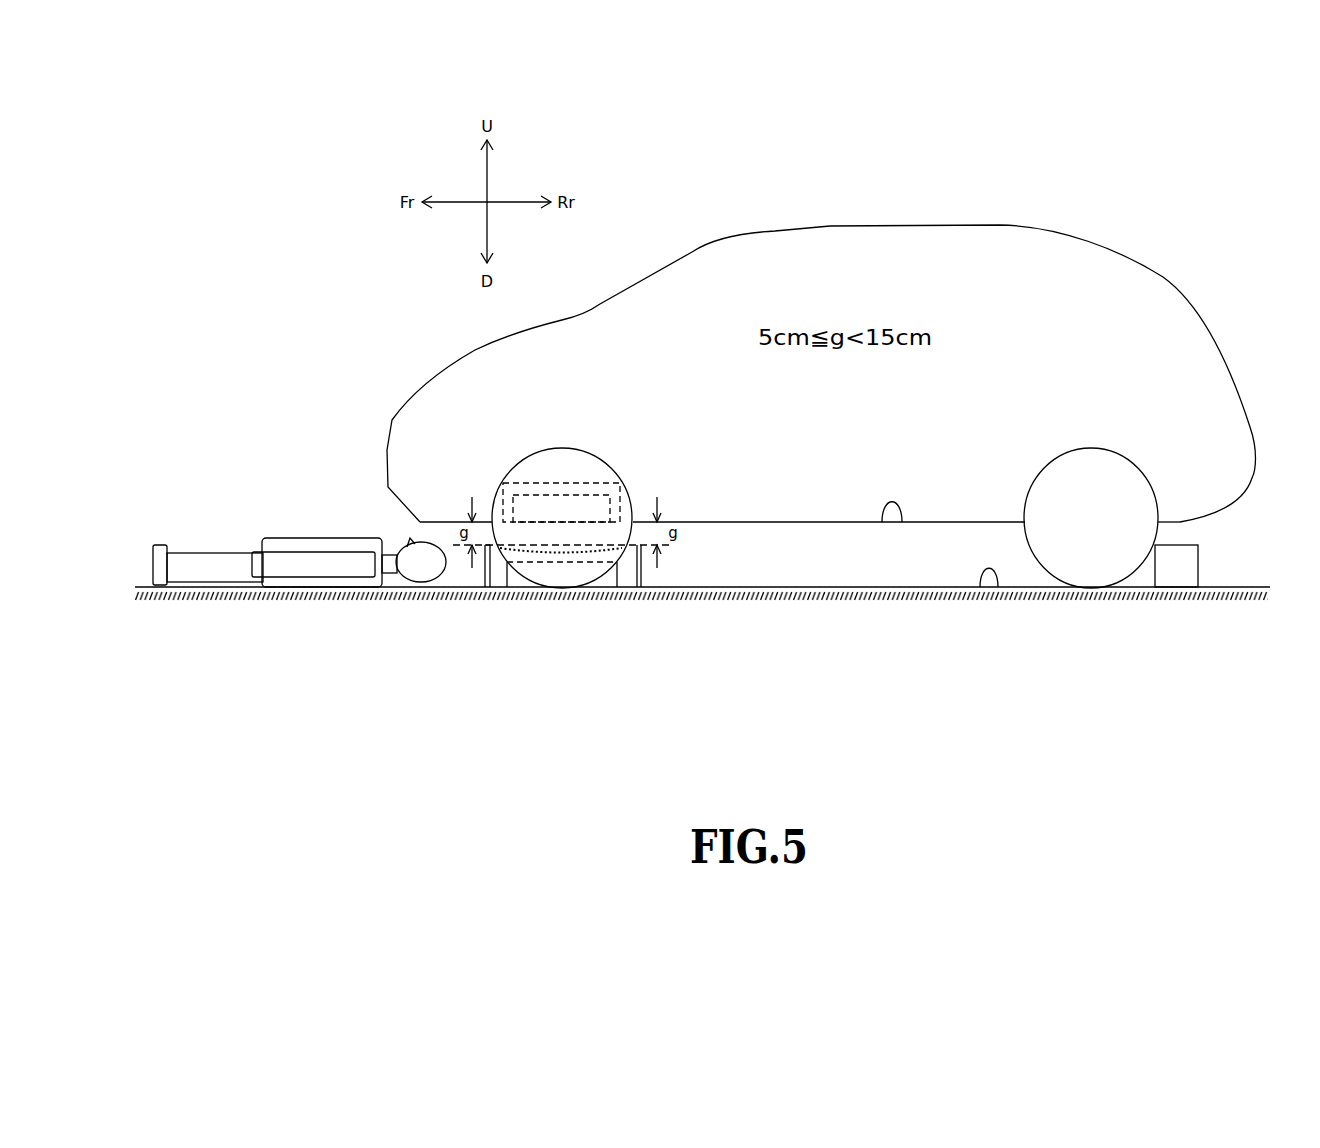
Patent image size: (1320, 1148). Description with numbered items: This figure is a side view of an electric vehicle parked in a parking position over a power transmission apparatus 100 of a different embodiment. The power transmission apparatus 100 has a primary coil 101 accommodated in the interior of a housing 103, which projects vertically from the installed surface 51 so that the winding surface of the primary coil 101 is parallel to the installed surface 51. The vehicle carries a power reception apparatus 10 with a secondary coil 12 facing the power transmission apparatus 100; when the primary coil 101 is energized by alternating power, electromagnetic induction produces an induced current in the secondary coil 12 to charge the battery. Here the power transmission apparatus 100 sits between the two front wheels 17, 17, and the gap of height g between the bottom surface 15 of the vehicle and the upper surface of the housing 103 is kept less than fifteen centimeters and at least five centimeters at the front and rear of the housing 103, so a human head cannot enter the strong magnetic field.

The power reception apparatus 10 is at (597, 481).
The secondary coil 12 is at (522, 495).
The front wheel 17 is at (560, 447).
The bottom surface 15 is at (902, 522).
The power transmission apparatus 100 is at (572, 587).
The primary coil 101 is at (618, 578).
The housing 103 is at (485, 570).
The installed surface 51 is at (998, 587).